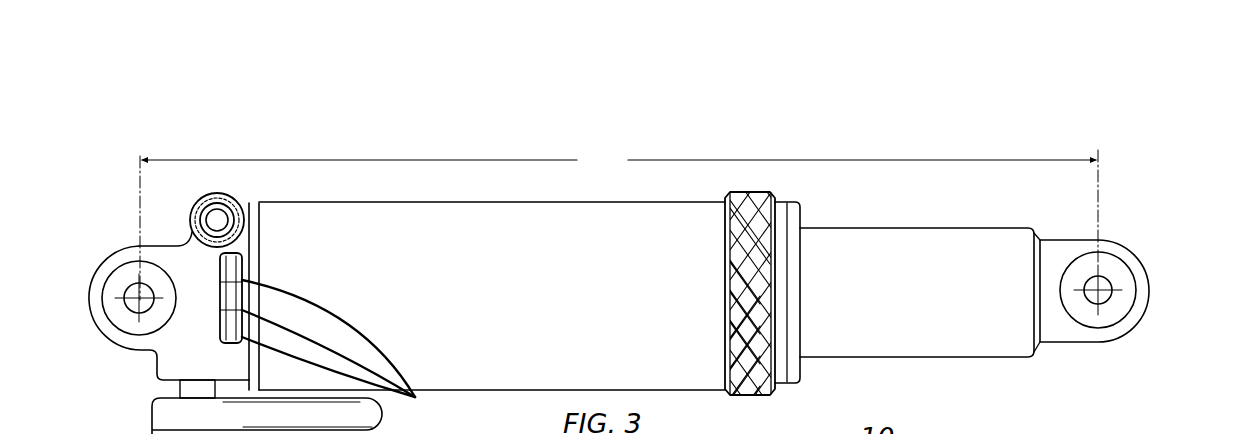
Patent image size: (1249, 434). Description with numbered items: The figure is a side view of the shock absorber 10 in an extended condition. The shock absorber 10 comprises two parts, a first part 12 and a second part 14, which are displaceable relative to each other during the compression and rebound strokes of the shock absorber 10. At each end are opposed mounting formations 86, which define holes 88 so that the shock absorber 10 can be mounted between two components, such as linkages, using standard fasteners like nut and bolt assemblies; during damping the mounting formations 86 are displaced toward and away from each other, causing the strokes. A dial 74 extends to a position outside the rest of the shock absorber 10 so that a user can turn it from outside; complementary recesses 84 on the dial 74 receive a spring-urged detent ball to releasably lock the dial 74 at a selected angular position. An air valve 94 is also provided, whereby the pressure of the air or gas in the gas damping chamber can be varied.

The shock absorber 10 is at (642, 223).
The first part 12 is at (941, 140).
The second part 14 is at (548, 177).
The dial 74 is at (244, 262).
The complementary recesses 84 is at (344, 357).
The mounting formations 86 is at (114, 238).
The holes 88 is at (140, 300).
The air valve 94 is at (217, 222).